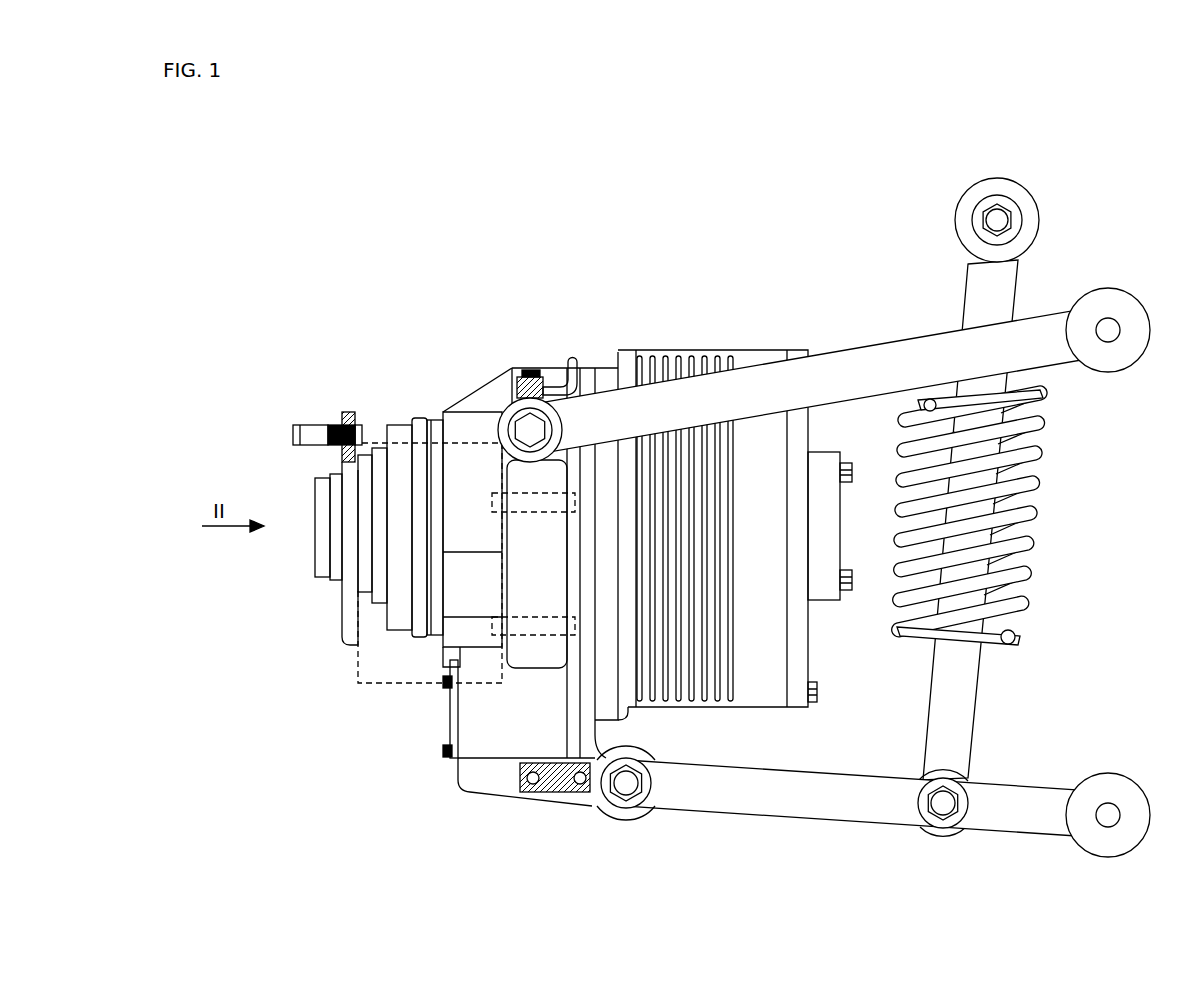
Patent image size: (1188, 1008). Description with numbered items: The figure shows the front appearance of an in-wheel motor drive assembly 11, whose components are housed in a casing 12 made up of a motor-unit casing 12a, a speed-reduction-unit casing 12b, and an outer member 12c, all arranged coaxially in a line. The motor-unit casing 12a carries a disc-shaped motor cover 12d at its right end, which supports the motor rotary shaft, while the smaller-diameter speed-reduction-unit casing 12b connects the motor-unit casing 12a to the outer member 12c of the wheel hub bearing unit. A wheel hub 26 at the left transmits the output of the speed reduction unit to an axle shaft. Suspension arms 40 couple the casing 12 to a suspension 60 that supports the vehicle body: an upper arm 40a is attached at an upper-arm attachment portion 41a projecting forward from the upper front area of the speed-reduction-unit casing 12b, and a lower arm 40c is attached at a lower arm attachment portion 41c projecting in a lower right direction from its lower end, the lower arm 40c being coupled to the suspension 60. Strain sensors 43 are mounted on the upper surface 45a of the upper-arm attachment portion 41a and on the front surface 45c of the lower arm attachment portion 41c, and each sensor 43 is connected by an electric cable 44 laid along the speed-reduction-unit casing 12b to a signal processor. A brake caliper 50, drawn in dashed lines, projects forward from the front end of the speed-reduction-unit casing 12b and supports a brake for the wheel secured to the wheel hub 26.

The in-wheel motor drive assembly 11 is at (1053, 160).
The casing 12 is at (661, 273).
The motor-unit casing 12a is at (665, 350).
The speed-reduction-unit casing 12b is at (548, 362).
The outer member 12c is at (398, 418).
The motor cover 12d is at (810, 644).
The wheel hub 26 is at (345, 630).
The suspension arms 40 is at (838, 585).
The upper arm 40a is at (898, 360).
The lower arm 40c is at (835, 808).
The upper-arm attachment portion 41a is at (494, 402).
The lower arm attachment portion 41c is at (585, 797).
The sensor 43 is at (535, 375).
The electric cable 44 is at (570, 360).
The upper surface 45a is at (512, 382).
The front surface 45c is at (493, 782).
The brake caliper 50 is at (368, 692).
The suspension 60 is at (1042, 505).